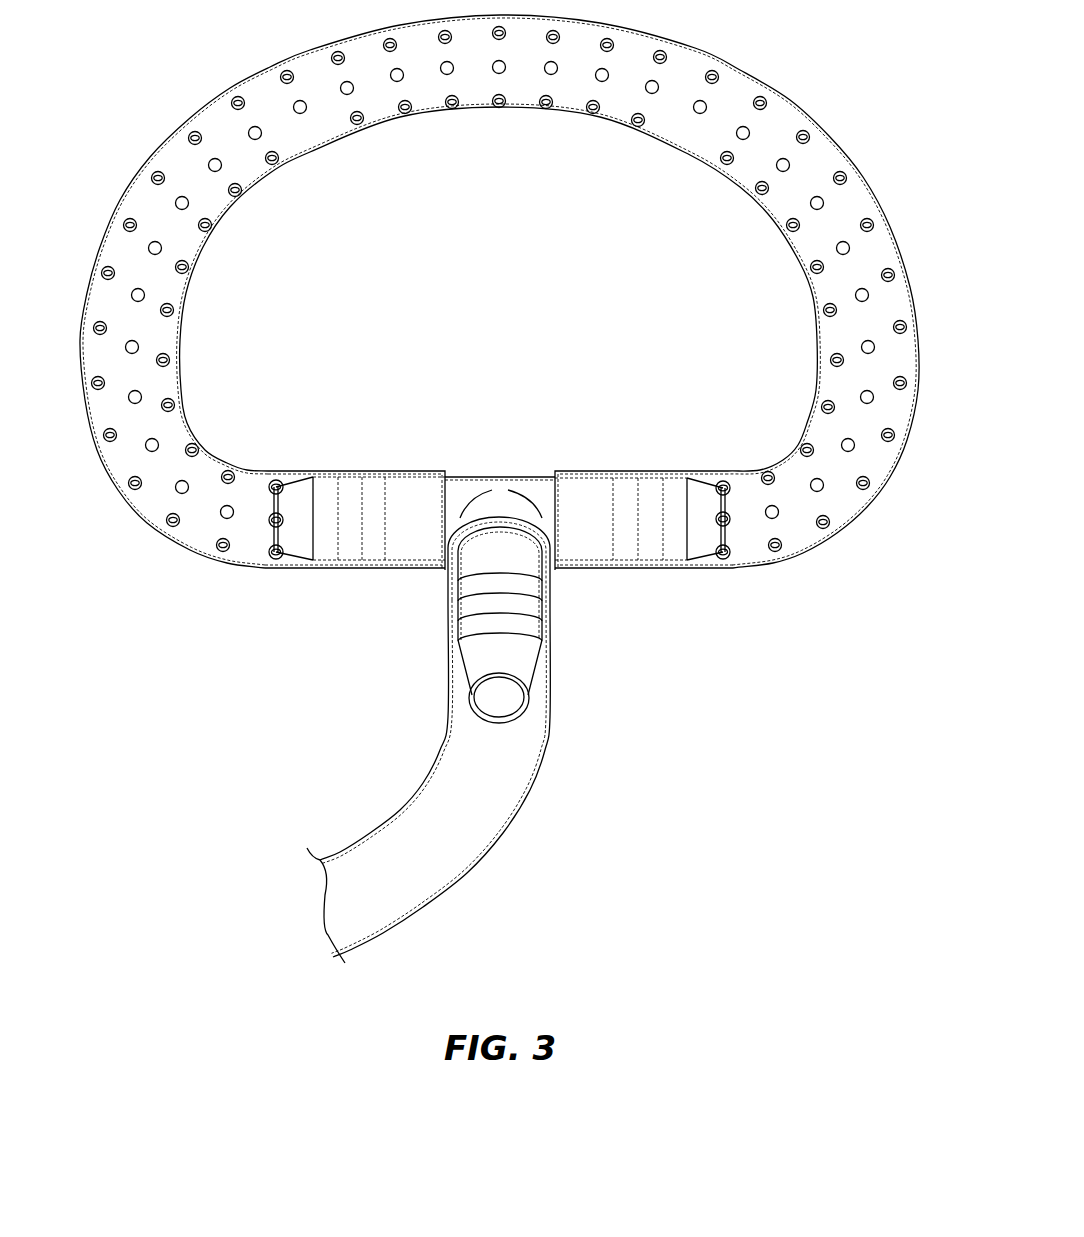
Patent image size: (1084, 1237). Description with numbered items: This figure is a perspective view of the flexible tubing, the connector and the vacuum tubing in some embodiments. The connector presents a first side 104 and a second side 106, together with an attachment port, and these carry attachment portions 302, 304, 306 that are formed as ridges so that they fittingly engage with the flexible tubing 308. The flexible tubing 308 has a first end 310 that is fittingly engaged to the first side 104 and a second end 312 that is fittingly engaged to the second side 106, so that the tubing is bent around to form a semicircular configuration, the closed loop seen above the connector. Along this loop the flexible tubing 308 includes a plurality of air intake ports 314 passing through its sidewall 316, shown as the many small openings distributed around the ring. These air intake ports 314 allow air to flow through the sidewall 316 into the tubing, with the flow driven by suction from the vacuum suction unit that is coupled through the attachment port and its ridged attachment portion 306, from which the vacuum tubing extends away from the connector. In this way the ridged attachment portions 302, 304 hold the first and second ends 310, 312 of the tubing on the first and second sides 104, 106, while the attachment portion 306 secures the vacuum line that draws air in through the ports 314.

The first side 104 is at (430, 471).
The second side 106 is at (592, 471).
The attachment portion 302 is at (668, 479).
The attachment portion 304 is at (330, 478).
The attachment portion 306 is at (540, 647).
The flexible tubing 308 is at (433, 122).
The first end 310 is at (325, 569).
The second end 312 is at (597, 569).
The air intake ports 314 is at (189, 268).
The sidewall 316 is at (215, 240).